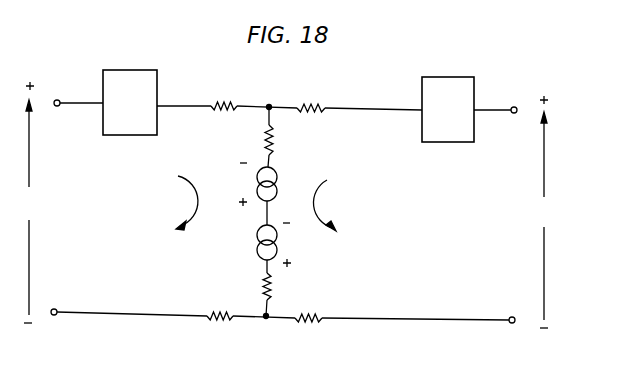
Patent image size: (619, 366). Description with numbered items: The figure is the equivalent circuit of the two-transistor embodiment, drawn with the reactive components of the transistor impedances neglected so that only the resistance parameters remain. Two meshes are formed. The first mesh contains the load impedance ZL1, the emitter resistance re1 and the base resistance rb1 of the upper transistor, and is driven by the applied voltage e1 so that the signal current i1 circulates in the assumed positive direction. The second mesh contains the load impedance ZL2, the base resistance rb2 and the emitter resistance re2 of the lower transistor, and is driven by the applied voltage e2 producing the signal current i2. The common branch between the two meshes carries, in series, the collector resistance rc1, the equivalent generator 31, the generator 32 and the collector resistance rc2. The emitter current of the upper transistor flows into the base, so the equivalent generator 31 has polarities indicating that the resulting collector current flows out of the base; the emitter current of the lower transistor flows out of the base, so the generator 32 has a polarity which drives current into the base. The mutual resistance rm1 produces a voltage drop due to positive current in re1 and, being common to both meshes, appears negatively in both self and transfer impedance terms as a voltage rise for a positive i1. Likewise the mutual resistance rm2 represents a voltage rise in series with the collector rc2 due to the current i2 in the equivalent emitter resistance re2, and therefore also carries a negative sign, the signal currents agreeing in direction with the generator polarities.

The equivalent generator 31 is at (257, 184).
The generator 32 is at (279, 242).
The load impedance ZL1 is at (130, 102).
The load impedance ZL2 is at (448, 109).
The equivalent emitter resistance re1 is at (224, 89).
The base resistance rb1 is at (311, 91).
The collector resistance rc1 is at (282, 140).
The mutual resistance rm1 is at (272, 184).
The mutual resistance rm2 is at (253, 245).
The collector resistance rc2 is at (282, 286).
The base resistance rb2 is at (220, 331).
The equivalent emitter resistance re2 is at (308, 333).
The applied voltage e1 is at (30, 202).
The applied voltage e2 is at (545, 212).
The signal current i1 is at (181, 203).
The signal current i2 is at (337, 205).